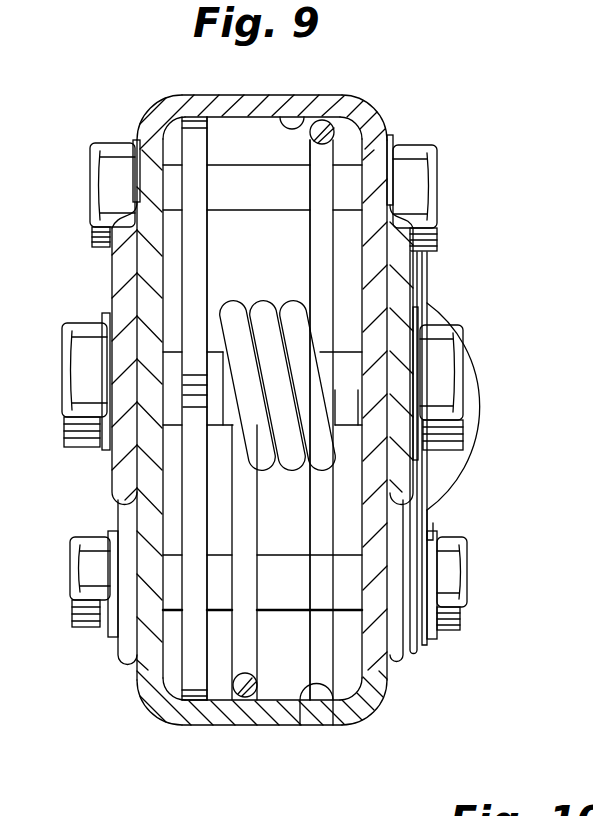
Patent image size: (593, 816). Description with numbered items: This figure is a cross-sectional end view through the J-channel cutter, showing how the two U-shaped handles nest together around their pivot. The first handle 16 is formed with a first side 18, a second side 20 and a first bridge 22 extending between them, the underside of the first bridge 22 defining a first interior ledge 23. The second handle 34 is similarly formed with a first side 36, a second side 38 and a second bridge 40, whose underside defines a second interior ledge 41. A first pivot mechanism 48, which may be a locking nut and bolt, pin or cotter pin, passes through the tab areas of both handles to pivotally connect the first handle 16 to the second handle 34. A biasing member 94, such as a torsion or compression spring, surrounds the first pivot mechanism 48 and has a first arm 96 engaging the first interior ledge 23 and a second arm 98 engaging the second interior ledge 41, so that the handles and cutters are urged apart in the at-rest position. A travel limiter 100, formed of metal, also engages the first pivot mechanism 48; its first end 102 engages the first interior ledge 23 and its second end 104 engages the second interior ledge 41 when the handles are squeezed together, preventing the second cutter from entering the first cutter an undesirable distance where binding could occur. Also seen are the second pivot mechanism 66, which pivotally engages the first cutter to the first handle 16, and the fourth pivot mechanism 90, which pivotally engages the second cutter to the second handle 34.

The first handle 16 is at (240, 734).
The second handle 34 is at (121, 116).
The second bridge 40 is at (258, 93).
The second arm 98 is at (373, 112).
The first arm 96 is at (390, 687).
The first bridge 22 is at (270, 725).
The first interior ledge 23 is at (333, 702).
The second side 38 is at (123, 313).
The first side 36 is at (402, 282).
The second side 20 is at (150, 600).
The first side 18 is at (393, 540).
The travel limiter 100 is at (193, 257).
The second end 104 is at (192, 118).
The first end 102 is at (197, 688).
The fourth pivot mechanism 90 is at (222, 182).
The second interior ledge 41 is at (293, 135).
The first pivot mechanism 48 is at (223, 412).
The biasing member 94 is at (247, 385).
The second pivot mechanism 66 is at (453, 583).